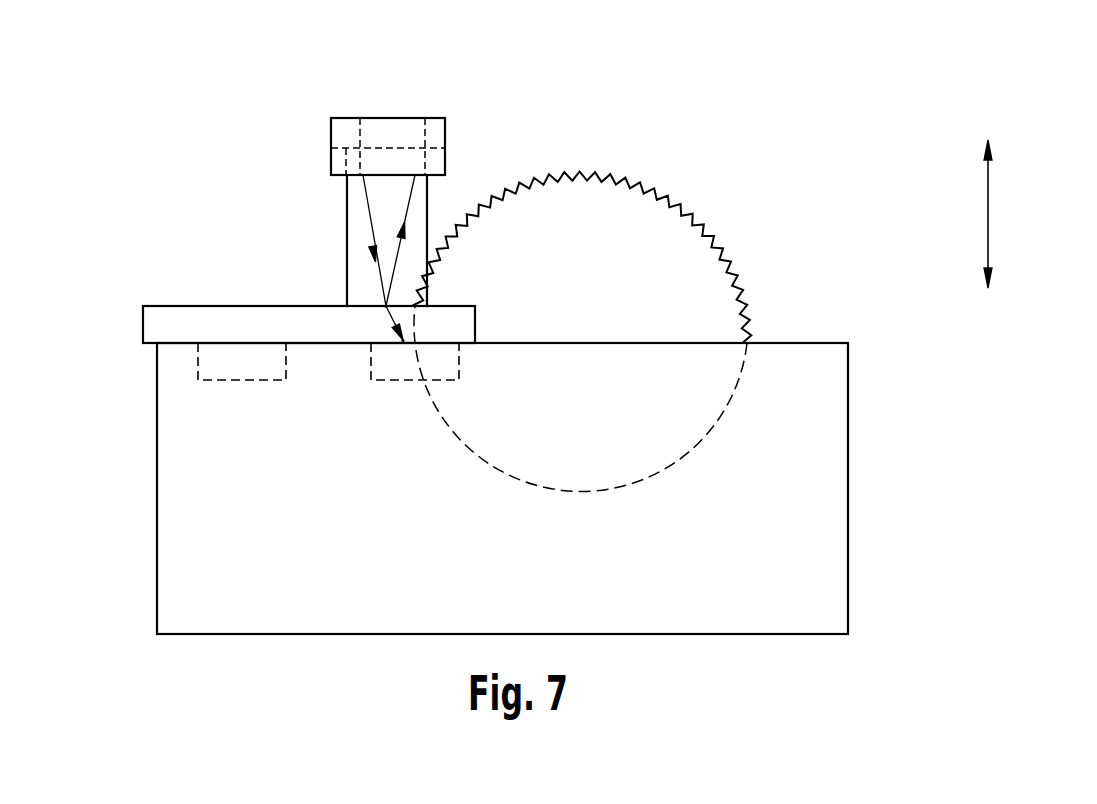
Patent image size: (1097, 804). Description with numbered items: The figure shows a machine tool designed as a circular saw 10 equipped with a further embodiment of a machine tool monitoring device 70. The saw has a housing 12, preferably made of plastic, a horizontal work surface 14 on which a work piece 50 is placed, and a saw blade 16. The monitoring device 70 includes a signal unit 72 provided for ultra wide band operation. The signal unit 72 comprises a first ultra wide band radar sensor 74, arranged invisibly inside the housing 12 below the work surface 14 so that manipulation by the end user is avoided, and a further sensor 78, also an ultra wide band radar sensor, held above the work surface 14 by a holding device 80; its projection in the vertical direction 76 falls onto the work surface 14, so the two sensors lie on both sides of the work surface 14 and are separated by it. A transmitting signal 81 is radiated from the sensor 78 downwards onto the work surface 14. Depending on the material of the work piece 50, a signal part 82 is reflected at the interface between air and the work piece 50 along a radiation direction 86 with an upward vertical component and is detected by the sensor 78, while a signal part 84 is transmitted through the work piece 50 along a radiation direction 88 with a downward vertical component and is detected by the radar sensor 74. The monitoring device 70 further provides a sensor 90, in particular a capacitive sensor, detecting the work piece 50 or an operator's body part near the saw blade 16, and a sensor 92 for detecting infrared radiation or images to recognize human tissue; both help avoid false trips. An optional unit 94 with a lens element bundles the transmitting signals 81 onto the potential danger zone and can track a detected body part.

The circular saw 10 is at (850, 115).
The housing 12 is at (815, 532).
The work surface 14 is at (817, 343).
The saw blade 16 is at (668, 227).
The work piece 50 is at (177, 303).
The machine tool monitoring device 70 is at (290, 88).
The signal unit 72 is at (455, 104).
The first ultra wide band radar sensor 74 is at (402, 380).
The vertical direction 76 is at (990, 210).
The further sensor 78 is at (375, 132).
The holding device 80 is at (360, 270).
The transmitting signal 81 is at (370, 218).
The signal part 82 is at (408, 200).
The signal part 84 is at (386, 310).
The radiation direction 86 is at (404, 232).
The radiation direction 88 is at (402, 338).
The further sensor 90 is at (232, 380).
The further sensor 92 is at (332, 160).
The unit 94 is at (392, 158).